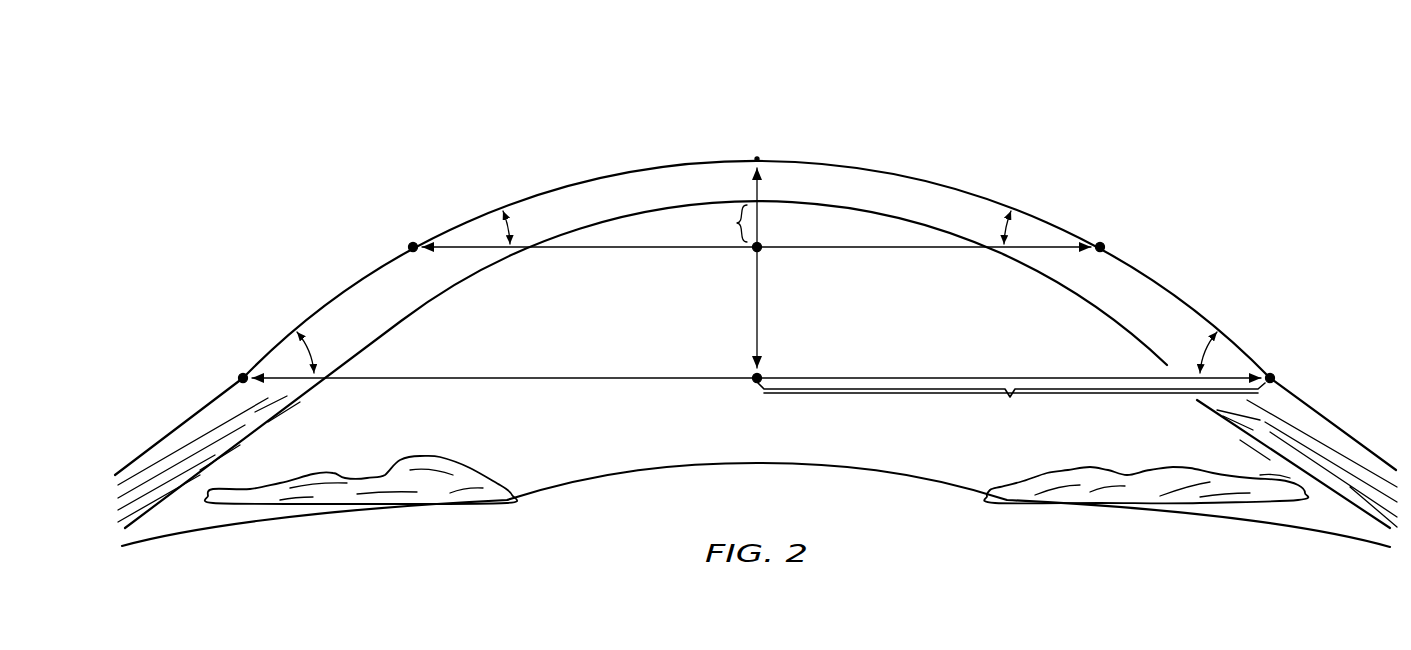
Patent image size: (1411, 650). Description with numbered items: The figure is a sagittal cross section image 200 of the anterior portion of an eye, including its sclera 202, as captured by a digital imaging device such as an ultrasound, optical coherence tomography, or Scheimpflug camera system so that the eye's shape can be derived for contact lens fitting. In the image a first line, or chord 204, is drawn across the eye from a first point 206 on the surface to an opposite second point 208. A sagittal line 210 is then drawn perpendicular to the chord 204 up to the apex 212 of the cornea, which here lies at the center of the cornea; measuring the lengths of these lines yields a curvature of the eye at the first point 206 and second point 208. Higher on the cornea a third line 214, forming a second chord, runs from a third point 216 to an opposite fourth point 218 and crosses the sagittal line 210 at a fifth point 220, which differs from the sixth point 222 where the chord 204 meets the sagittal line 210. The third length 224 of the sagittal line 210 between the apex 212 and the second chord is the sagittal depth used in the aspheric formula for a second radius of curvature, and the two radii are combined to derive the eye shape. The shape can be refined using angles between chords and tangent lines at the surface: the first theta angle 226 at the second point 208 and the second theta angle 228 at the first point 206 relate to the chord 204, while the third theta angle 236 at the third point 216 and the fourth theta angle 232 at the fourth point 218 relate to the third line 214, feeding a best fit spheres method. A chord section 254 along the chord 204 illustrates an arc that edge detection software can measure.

The cross section image 200 is at (411, 119).
The sclera 202 is at (170, 467).
The chord 204 is at (640, 380).
The first point 206 is at (1271, 375).
The second point 208 is at (242, 375).
The sagittal line 210 is at (758, 300).
The apex 212 is at (757, 159).
The third line 214 is at (620, 249).
The third point 216 is at (411, 246).
The fourth point 218 is at (1102, 246).
The fifth point 220 is at (754, 250).
The sixth point 222 is at (755, 381).
The third length 224 is at (718, 223).
The angle θ1 226 is at (311, 342).
The angle θ2 228 is at (1203, 342).
The angle θ4 232 is at (1003, 222).
The angle θ3 236 is at (511, 222).
The chord section 254 is at (1011, 407).